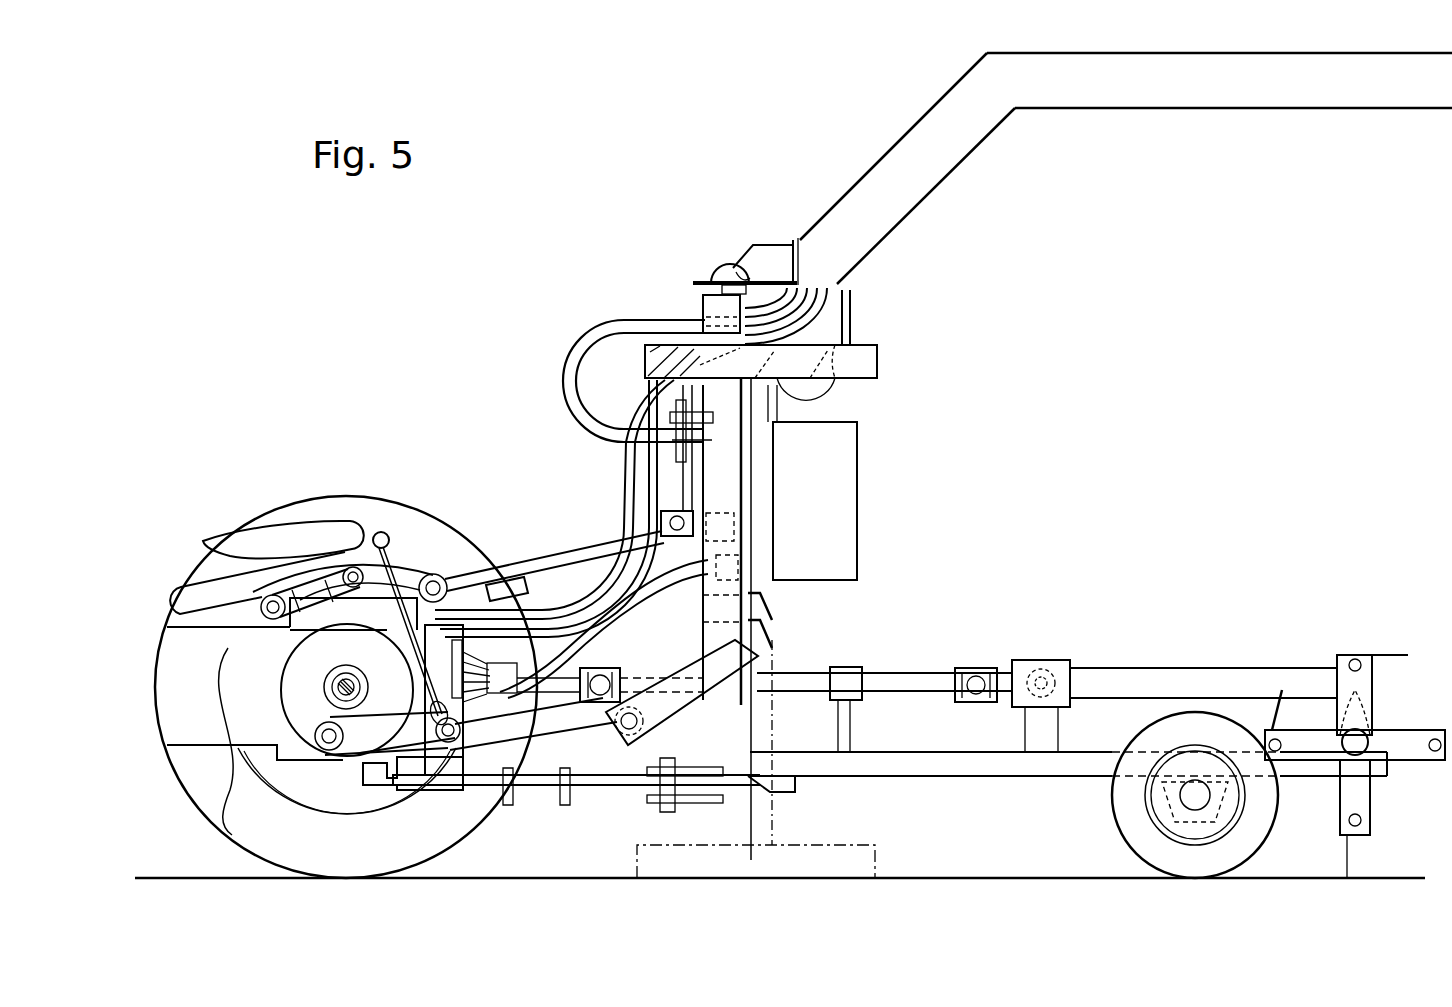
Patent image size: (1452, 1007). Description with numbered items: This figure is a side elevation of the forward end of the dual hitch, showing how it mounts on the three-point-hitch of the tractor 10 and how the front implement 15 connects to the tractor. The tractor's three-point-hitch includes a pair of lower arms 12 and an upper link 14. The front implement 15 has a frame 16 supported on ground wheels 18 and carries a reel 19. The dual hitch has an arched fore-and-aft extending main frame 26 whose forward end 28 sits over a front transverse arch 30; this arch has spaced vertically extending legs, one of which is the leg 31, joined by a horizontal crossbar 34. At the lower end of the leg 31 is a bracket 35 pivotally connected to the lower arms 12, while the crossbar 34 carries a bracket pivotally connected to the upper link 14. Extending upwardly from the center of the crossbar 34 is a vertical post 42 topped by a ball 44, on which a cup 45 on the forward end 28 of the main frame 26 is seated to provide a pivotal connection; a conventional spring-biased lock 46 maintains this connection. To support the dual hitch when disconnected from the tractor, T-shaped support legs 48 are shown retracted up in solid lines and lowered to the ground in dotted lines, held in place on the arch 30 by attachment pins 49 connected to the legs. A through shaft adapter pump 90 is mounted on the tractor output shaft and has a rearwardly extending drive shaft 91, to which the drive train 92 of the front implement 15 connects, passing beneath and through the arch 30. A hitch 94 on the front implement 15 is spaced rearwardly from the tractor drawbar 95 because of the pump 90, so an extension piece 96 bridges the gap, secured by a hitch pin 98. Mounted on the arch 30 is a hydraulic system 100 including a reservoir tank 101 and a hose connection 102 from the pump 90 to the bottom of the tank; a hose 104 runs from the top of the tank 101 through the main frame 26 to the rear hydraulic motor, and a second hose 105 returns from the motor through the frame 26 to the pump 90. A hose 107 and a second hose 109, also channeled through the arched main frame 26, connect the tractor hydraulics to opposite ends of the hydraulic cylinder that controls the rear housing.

The tractor 10 is at (232, 822).
The lower arms 12 is at (555, 726).
The upper link 14 is at (520, 570).
The front implement 15 is at (1165, 640).
The frame 16 is at (975, 772).
The ground wheels 18 is at (1130, 826).
The reel 19 is at (1392, 738).
The main frame 26 is at (1215, 66).
The forward end 28 is at (905, 162).
The front transverse arch 30 is at (655, 290).
The leg 31 is at (745, 576).
The horizontal crossbar 34 is at (745, 520).
The bracket 35 is at (665, 700).
The vertical post 42 is at (722, 466).
The ball 44 is at (711, 272).
The cup 45 is at (718, 264).
The spring-biased lock 46 is at (752, 246).
The T-shaped support legs 48 is at (878, 362).
The attachment pins 49 is at (772, 636).
The through shaft adapter pump 90 is at (470, 656).
The drive shaft 91 is at (610, 670).
The drive train 92 is at (880, 668).
The hitch 94 is at (785, 788).
The drawbar 95 is at (440, 792).
The extension piece 96 is at (612, 788).
The hitch pin 98 is at (674, 808).
The hydraulic system 100 is at (650, 410).
The reservoir tank 101 is at (857, 535).
The hose connection 102 is at (692, 580).
The hose 104 is at (592, 332).
The second hose 105 is at (622, 508).
The hose 107 is at (696, 494).
The second hose 109 is at (624, 463).